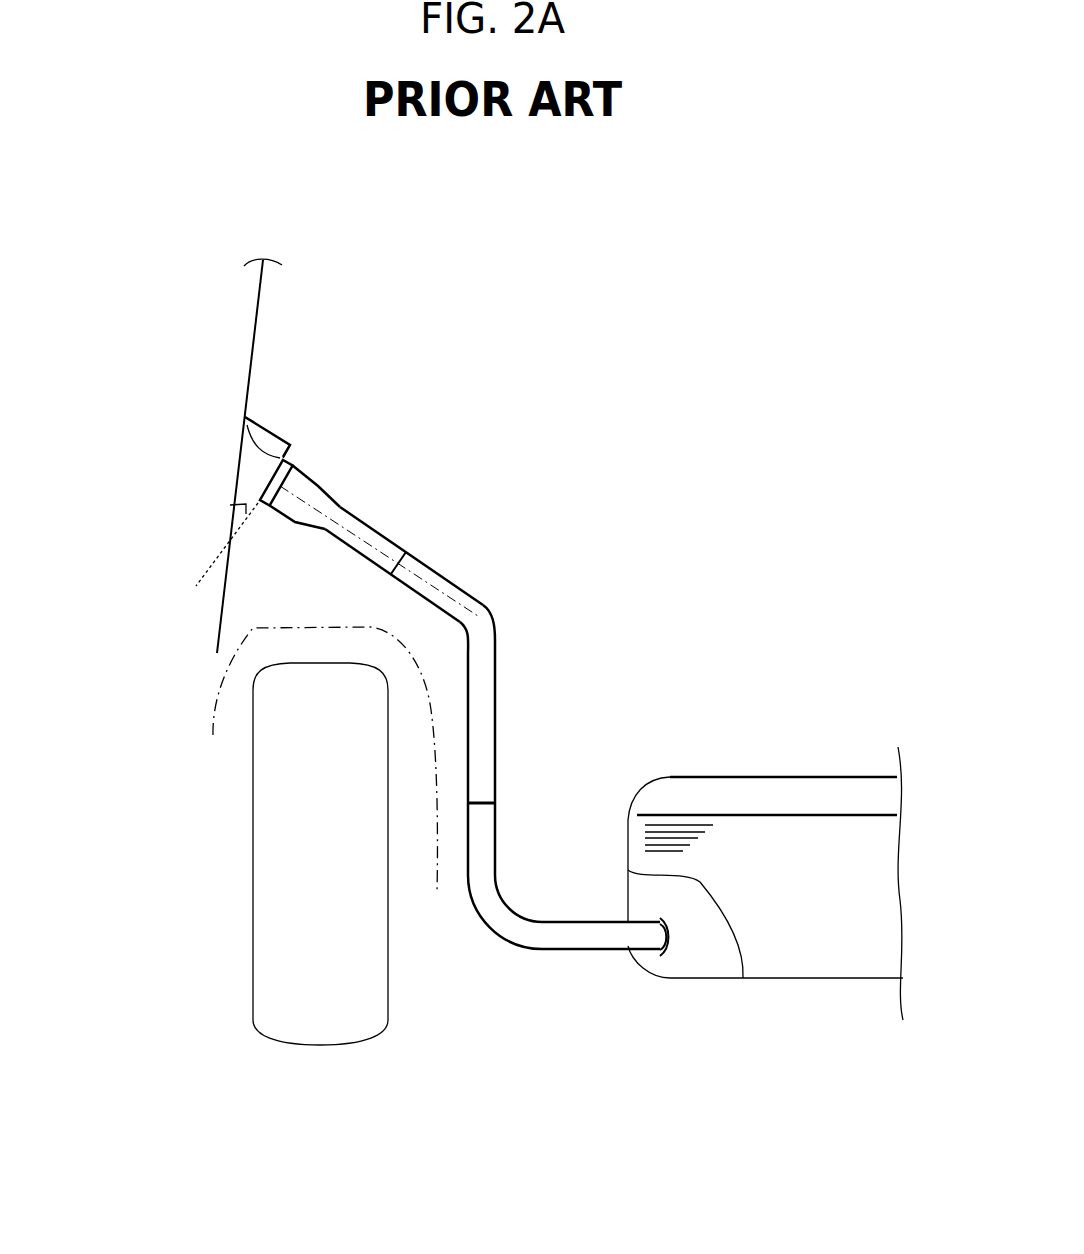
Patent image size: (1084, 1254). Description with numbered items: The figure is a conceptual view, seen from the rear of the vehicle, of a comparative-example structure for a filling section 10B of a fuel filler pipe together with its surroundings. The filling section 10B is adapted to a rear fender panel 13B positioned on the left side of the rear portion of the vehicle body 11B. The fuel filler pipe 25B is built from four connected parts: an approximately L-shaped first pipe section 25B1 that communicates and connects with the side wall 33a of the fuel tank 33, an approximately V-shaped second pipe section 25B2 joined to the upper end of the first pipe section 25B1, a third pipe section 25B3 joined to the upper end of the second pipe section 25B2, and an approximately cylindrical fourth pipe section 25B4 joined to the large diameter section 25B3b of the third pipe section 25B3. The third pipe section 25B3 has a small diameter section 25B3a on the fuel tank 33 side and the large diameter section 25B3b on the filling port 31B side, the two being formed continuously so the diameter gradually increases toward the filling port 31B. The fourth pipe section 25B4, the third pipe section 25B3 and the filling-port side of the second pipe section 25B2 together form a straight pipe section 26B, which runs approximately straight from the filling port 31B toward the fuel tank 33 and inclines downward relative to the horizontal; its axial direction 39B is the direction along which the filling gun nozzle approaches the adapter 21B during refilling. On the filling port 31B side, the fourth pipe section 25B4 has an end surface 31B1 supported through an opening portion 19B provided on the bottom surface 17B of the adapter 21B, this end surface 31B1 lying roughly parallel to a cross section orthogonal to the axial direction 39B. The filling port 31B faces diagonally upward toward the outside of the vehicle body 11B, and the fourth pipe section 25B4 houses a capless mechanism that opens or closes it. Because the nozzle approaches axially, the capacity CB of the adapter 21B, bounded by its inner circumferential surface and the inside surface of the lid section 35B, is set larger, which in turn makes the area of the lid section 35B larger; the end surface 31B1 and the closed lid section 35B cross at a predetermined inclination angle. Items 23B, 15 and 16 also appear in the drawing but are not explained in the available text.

The filling section 10B is at (362, 368).
The vehicle body 11B is at (505, 266).
The rear fender panel 13B is at (262, 297).
The glass surface 23B is at (254, 348).
The opening portion 19B is at (246, 437).
The adapter 21B is at (272, 433).
The bottom surface 17B is at (282, 455).
The lid section 35B is at (244, 447).
The capacity CB is at (250, 476).
The filling port 31B is at (262, 483).
The end surface 31B1 is at (260, 493).
The fourth pipe section 25B4 is at (288, 466).
The fuel filler pipe 25B is at (449, 708).
The third pipe section 25B3 is at (360, 544).
The small diameter section 25B3a is at (377, 553).
The large diameter section 25B3b is at (297, 520).
The second pipe section 25B2 is at (488, 667).
The first pipe section 25B1 is at (542, 921).
The straight pipe section 26B is at (488, 585).
The axial direction 39B is at (343, 538).
The fuel tank 33 is at (838, 775).
The side wall 33a is at (708, 958).
The reservoir / battery 15 is at (357, 1017).
The engine hood outline 16 is at (320, 760).